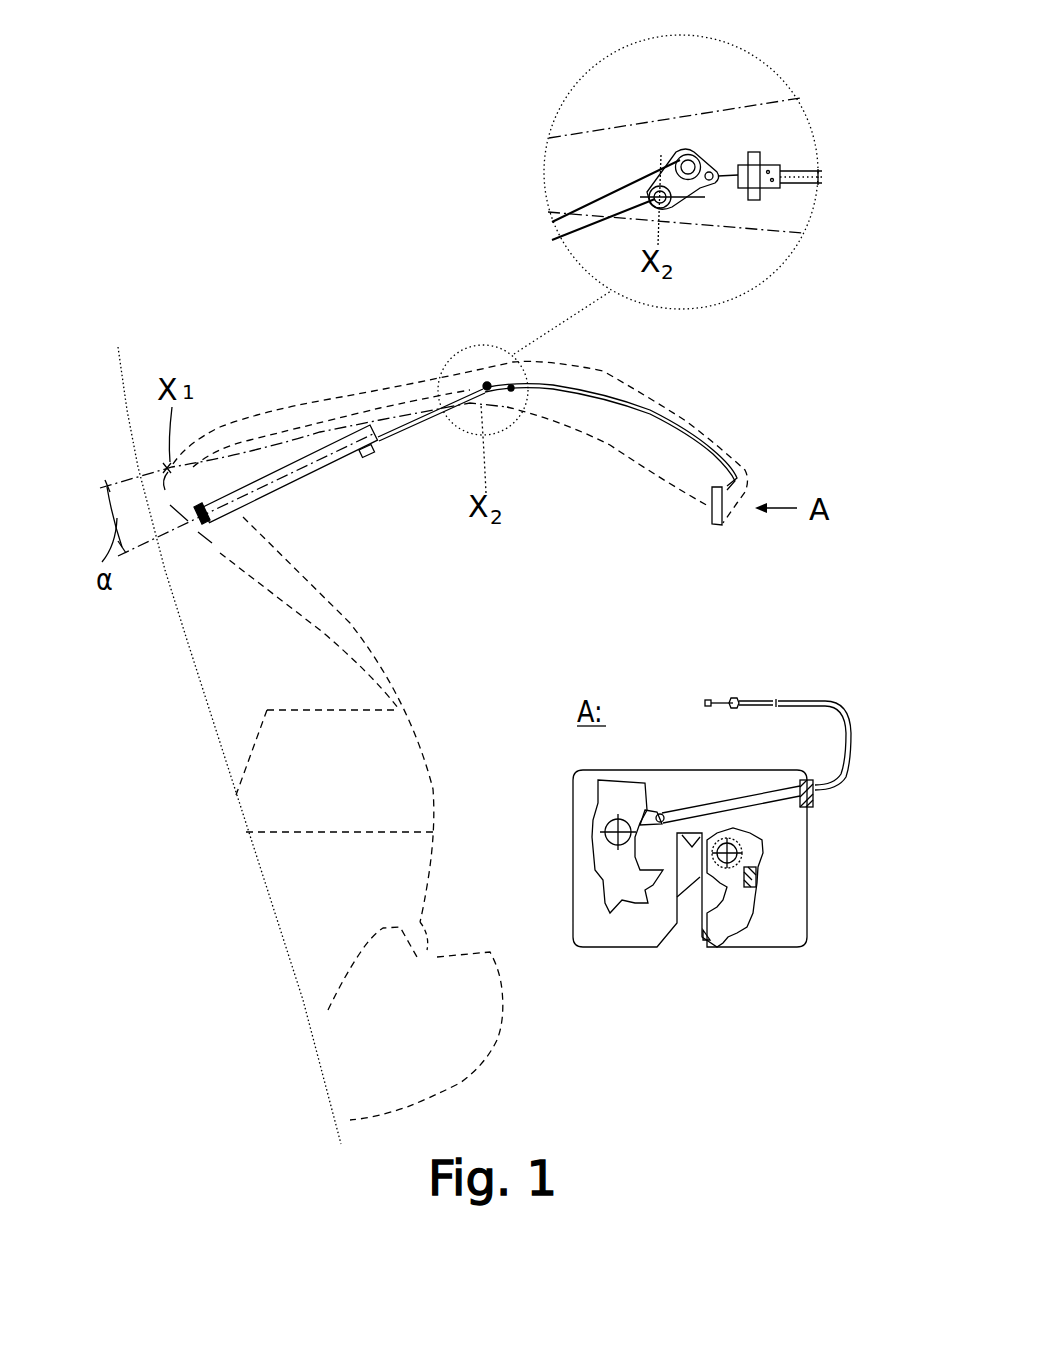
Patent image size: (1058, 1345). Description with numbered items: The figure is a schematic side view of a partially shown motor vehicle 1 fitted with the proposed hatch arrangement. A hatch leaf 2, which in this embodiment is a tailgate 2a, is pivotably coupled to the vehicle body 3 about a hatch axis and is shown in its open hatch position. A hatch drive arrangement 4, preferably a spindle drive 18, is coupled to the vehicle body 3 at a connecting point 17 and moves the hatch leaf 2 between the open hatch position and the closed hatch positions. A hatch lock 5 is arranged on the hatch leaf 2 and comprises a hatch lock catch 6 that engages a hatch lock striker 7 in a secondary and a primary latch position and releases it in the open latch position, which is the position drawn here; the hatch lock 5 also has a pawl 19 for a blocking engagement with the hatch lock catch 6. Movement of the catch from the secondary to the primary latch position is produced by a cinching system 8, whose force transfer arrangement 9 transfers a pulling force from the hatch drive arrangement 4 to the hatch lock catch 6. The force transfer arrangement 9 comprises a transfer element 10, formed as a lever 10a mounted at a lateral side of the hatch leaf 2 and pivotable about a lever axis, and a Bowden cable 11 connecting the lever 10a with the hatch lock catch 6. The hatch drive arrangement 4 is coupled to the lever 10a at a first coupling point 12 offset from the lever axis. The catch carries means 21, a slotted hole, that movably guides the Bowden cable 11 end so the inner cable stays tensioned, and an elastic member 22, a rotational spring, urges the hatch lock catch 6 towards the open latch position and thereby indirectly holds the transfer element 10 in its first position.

The motor vehicle 1 is at (156, 348).
The hatch leaf 2 is at (460, 395).
The tailgate 2a is at (328, 395).
The vehicle body 3 is at (225, 701).
The hatch drive arrangement 4 is at (283, 492).
The spindle drive 18 is at (350, 495).
The hatch lock 5 is at (707, 533).
The hatch lock catch 6 is at (757, 920).
The hatch lock striker 7 is at (403, 948).
The cinching system 8 is at (418, 215).
The force transfer arrangement 9 is at (518, 430).
The transfer element 10 is at (639, 300).
The lever 10a is at (707, 181).
The Bowden cable 11 is at (813, 168).
The first coupling point 12 is at (489, 383).
The connecting point 17 is at (203, 528).
The pawl 19 is at (628, 905).
The means for movably attaching the Bowden cable 21 is at (674, 810).
The elastic member 22 is at (747, 857).